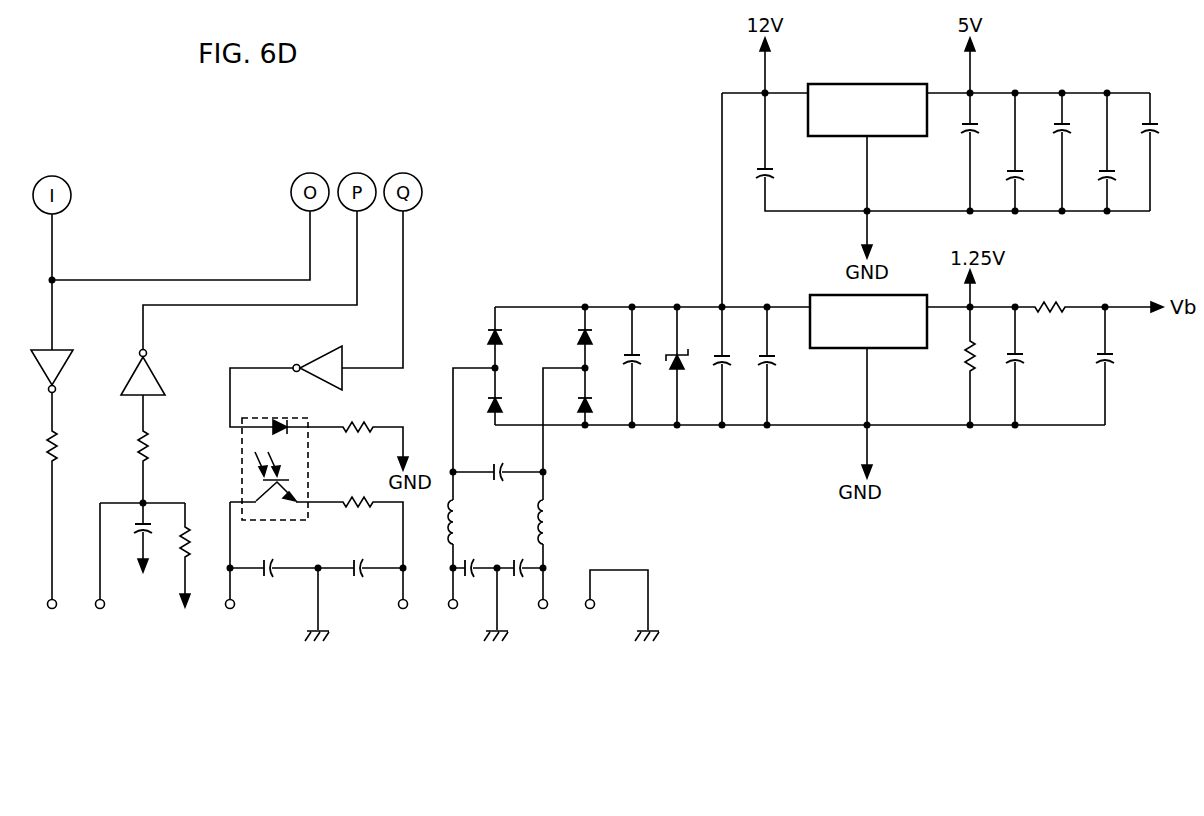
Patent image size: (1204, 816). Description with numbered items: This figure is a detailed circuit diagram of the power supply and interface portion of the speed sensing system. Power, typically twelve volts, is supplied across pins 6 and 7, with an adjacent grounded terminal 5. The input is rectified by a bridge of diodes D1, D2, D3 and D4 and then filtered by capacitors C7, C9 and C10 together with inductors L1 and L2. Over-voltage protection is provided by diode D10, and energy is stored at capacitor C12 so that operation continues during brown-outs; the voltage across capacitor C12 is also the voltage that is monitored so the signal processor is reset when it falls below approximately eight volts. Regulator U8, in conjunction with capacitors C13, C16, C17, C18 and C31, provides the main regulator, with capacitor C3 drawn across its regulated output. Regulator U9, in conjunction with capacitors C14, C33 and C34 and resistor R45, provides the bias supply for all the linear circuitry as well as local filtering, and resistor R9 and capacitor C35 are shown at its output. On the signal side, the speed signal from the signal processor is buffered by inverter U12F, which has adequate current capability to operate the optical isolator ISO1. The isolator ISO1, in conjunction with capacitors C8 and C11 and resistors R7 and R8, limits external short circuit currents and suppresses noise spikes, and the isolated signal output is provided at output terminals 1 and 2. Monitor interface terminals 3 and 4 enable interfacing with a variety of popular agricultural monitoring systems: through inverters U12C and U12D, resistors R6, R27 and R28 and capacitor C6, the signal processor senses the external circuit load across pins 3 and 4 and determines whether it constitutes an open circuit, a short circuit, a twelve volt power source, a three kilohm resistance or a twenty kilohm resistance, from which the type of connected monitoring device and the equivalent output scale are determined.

The inverter U12C is at (74, 371).
The inverter U12D is at (166, 373).
The inverter U12F is at (345, 371).
The resistor R6 is at (68, 446).
The resistor R27 is at (165, 446).
The resistor R28 is at (197, 567).
The capacitor C6 is at (134, 557).
The optical isolator ISO1 is at (275, 456).
The resistor R7 is at (358, 415).
The resistor R8 is at (358, 490).
The capacitor C11 is at (275, 559).
The capacitor C8 is at (359, 559).
The diode D1 is at (514, 337).
The diode D2 is at (514, 405).
The diode D3 is at (604, 337).
The diode D4 is at (604, 405).
The capacitor C12 is at (650, 366).
The diode D10 is at (695, 366).
The capacitor C34 is at (739, 259).
The capacitor C14 is at (786, 366).
The regulator U9 is at (868, 334).
The regulator U8 is at (867, 97).
The resistor R9 is at (958, 366).
The resistor R45 is at (1051, 292).
The capacitor C33 is at (1036, 366).
The capacitor C35 is at (1127, 366).
The capacitor C7 is at (499, 460).
The inductor L1 is at (467, 522).
The inductor L2 is at (559, 522).
The capacitor C9 is at (471, 559).
The capacitor C10 is at (521, 559).
The capacitor C31 is at (786, 174).
The capacitor C13 is at (990, 122).
The capacitor C16 is at (1033, 152).
The capacitor C17 is at (1081, 152).
The capacitor C18 is at (1126, 152).
The capacitor C3 is at (1165, 152).
The output terminal 1 is at (230, 621).
The output terminal 2 is at (403, 621).
The monitor interface terminal 3 is at (100, 621).
The monitor interface terminal 4 is at (52, 621).
The terminal 5 is at (590, 621).
The power input pin 6 is at (453, 621).
The power input 7 is at (543, 621).